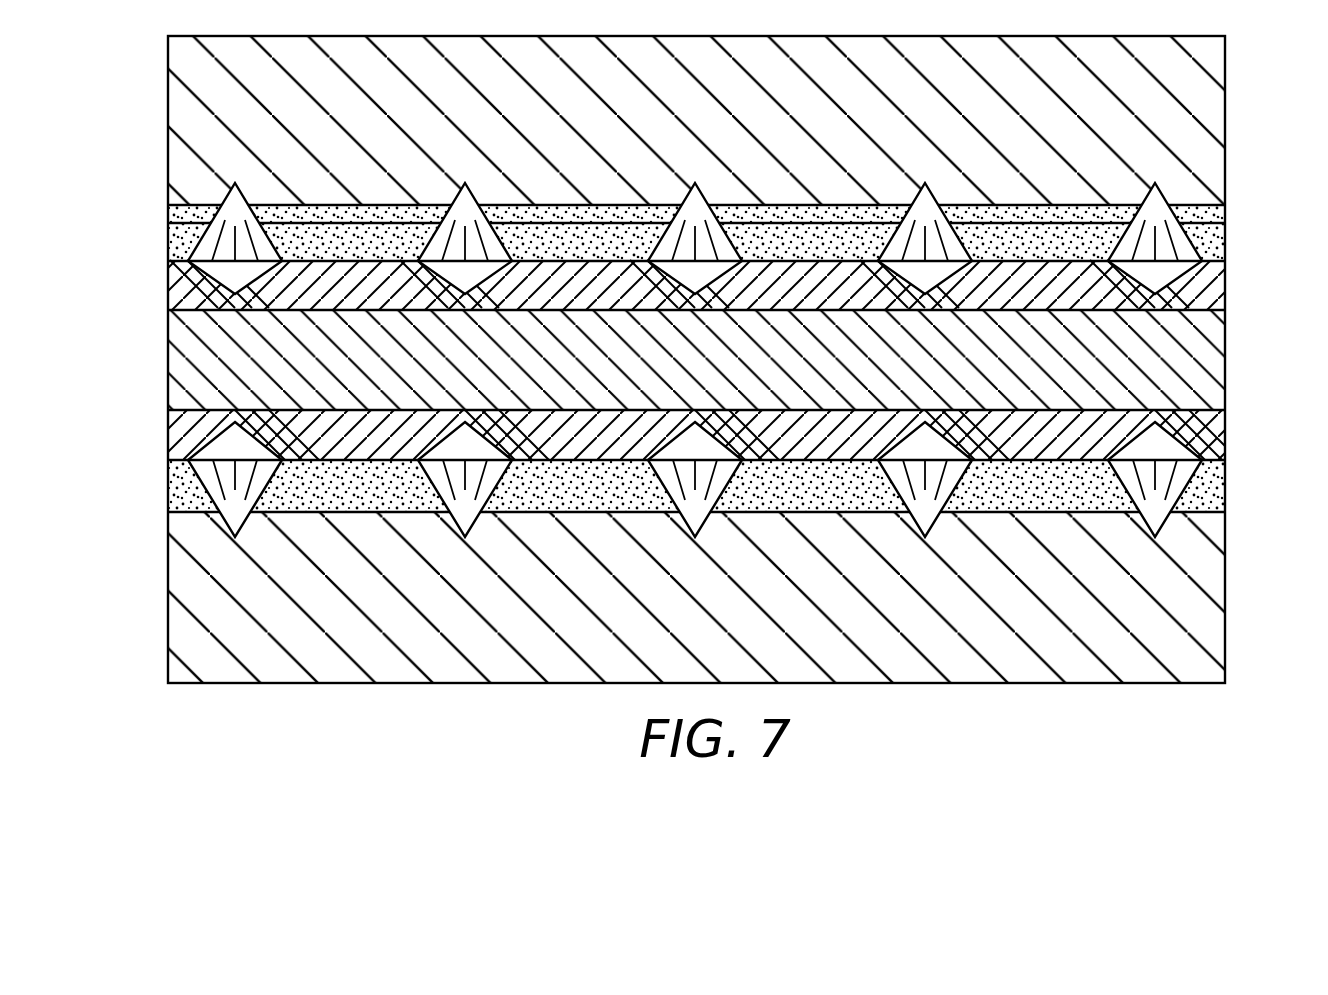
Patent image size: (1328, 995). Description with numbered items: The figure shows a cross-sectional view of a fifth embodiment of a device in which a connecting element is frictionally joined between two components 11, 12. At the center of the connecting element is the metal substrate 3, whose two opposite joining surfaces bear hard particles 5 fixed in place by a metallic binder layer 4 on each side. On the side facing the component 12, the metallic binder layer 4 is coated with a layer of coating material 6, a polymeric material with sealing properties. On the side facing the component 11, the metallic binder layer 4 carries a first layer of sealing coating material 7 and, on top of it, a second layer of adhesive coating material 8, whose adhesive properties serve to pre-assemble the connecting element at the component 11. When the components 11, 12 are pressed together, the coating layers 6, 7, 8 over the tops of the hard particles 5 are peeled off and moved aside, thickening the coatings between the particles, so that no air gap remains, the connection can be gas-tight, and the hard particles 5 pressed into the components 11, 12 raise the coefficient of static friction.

The component 11 is at (1205, 80).
The hard particles 5 is at (1157, 207).
The coating material 8 is at (183, 218).
The coating material 7 is at (183, 242).
The metallic binder layer 4 is at (1208, 277).
The metal substrate 3 is at (1202, 365).
The coating material 6 is at (177, 482).
The component 12 is at (1205, 598).